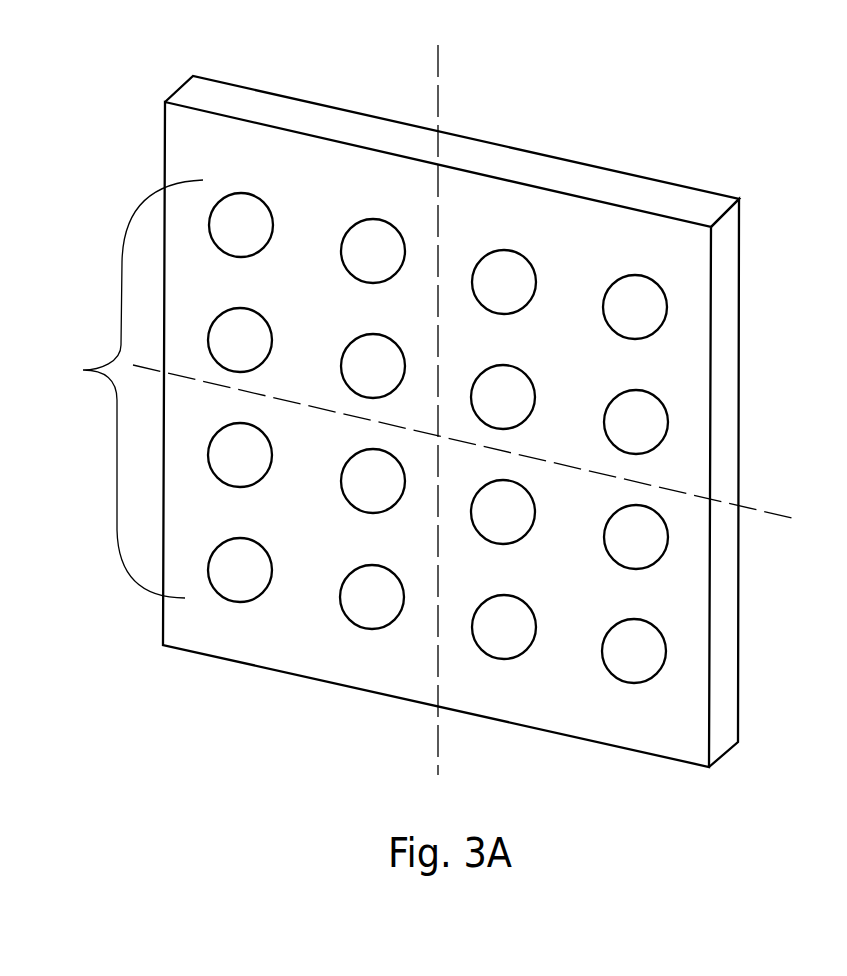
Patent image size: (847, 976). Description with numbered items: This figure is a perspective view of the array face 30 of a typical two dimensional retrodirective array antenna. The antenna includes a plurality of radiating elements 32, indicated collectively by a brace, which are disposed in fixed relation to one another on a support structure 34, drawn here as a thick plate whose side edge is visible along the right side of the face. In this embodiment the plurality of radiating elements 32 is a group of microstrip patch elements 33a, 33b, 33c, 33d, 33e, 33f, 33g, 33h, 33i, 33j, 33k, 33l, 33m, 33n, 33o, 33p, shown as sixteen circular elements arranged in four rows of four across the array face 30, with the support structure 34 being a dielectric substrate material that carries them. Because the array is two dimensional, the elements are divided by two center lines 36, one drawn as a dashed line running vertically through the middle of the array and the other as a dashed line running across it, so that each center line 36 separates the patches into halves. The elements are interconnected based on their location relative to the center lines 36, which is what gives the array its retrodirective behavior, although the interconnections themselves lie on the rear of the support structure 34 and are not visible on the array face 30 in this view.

The array face 30 is at (692, 267).
The plurality of radiating elements 32 is at (83, 370).
The microstrip patch element 33a is at (257, 197).
The microstrip patch element 33b is at (389, 223).
The microstrip patch element 33c is at (520, 254).
The microstrip patch element 33d is at (651, 279).
The microstrip patch element 33e is at (256, 312).
The microstrip patch element 33f is at (389, 338).
The microstrip patch element 33g is at (519, 369).
The microstrip patch element 33h is at (652, 394).
The microstrip patch element 33i is at (256, 427).
The microstrip patch element 33j is at (389, 453).
The microstrip patch element 33k is at (519, 484).
The microstrip patch element 33l is at (652, 509).
The microstrip patch element 33m is at (256, 542).
The microstrip patch element 33n is at (388, 569).
The microstrip patch element 33o is at (520, 599).
The microstrip patch element 33p is at (650, 623).
The support structure 34 is at (727, 732).
The center line 36 is at (438, 76).